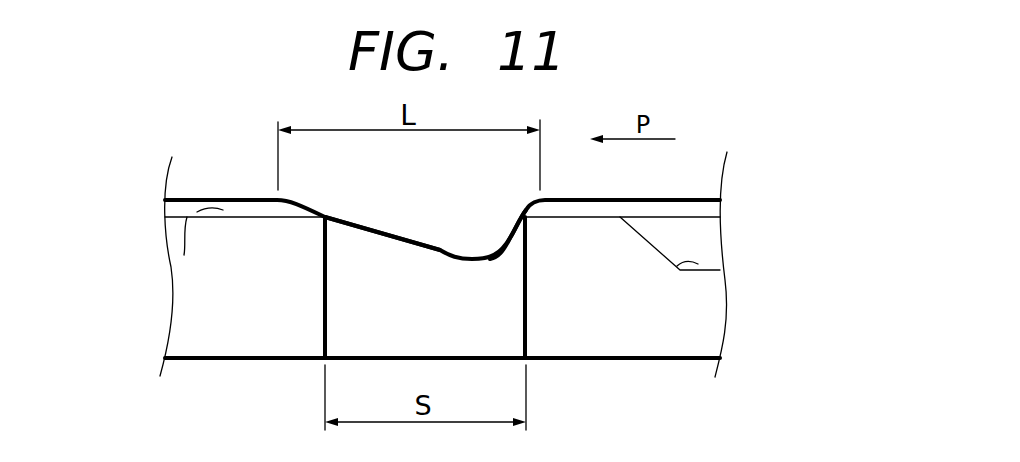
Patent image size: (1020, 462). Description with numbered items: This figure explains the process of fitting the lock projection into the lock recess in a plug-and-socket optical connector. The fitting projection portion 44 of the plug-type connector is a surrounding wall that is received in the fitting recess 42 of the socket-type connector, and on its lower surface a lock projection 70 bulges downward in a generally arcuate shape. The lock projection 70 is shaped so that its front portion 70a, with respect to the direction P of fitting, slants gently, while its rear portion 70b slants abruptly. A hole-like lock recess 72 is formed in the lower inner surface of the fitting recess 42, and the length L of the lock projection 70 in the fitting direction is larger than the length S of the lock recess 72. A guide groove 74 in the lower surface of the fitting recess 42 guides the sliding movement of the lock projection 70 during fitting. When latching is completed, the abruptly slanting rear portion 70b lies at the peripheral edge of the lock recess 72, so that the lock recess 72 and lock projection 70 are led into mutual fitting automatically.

The fitting recess 42 is at (170, 270).
The fitting projection portion 44 is at (173, 211).
The lock projection 70 is at (452, 262).
The front portion of the lock projection 70a is at (377, 238).
The rear portion of the lock projection 70b is at (517, 233).
The lock recess 72 is at (339, 322).
The guide groove 74 is at (658, 278).